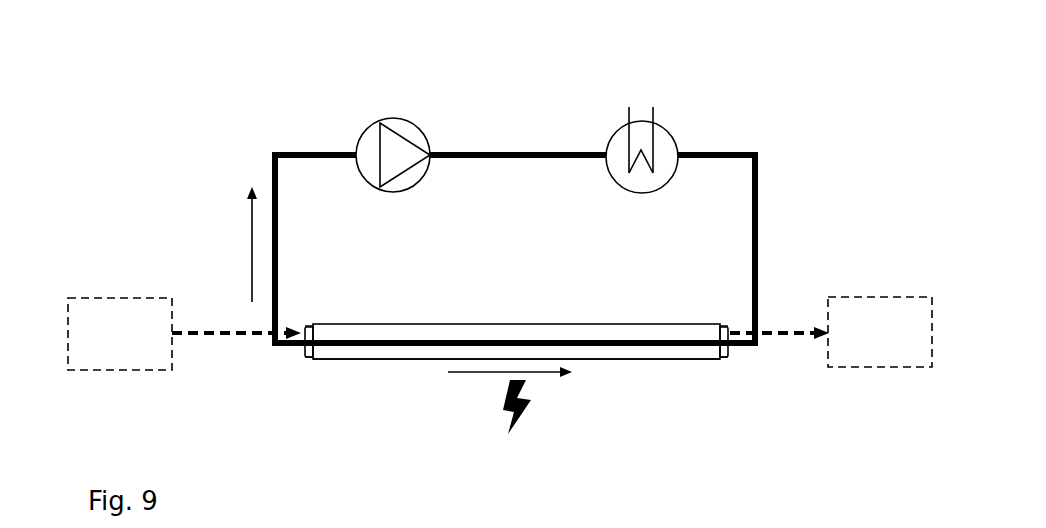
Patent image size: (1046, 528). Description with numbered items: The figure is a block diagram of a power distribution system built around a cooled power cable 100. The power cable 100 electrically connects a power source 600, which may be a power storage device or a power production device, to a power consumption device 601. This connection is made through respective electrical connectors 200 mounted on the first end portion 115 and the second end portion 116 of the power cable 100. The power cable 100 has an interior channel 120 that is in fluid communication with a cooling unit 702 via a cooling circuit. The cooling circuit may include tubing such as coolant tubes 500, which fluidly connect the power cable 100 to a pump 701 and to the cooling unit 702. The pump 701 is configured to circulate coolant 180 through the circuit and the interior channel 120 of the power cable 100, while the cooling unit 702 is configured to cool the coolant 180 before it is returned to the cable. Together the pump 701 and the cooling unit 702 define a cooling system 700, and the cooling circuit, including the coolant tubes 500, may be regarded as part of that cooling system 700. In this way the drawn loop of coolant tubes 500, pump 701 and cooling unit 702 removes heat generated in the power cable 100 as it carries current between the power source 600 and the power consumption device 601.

The power cable 100 is at (708, 350).
The first end portion 115 is at (308, 357).
The second end portion 116 is at (730, 348).
The interior channel 120 is at (650, 345).
The coolant 180 is at (227, 244).
The electrical connectors 200 is at (296, 332).
The coolant tubes 500 is at (318, 153).
The power source 600 is at (184, 334).
The power consumption device 601 is at (831, 332).
The cooling system 700 is at (517, 104).
The pump 701 is at (424, 126).
The cooling unit 702 is at (610, 136).